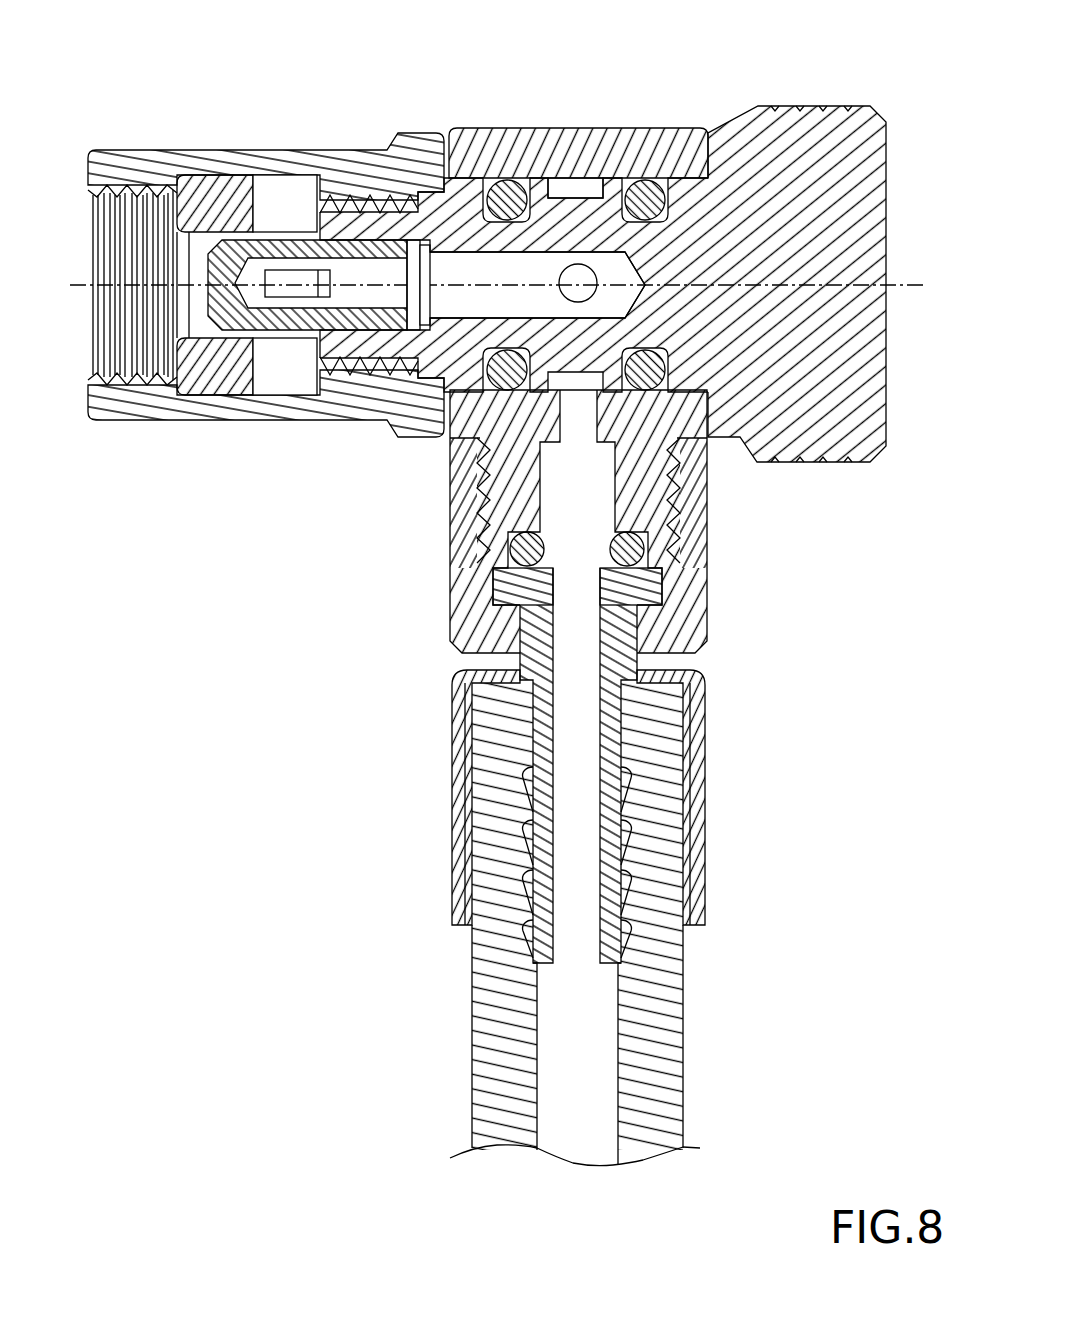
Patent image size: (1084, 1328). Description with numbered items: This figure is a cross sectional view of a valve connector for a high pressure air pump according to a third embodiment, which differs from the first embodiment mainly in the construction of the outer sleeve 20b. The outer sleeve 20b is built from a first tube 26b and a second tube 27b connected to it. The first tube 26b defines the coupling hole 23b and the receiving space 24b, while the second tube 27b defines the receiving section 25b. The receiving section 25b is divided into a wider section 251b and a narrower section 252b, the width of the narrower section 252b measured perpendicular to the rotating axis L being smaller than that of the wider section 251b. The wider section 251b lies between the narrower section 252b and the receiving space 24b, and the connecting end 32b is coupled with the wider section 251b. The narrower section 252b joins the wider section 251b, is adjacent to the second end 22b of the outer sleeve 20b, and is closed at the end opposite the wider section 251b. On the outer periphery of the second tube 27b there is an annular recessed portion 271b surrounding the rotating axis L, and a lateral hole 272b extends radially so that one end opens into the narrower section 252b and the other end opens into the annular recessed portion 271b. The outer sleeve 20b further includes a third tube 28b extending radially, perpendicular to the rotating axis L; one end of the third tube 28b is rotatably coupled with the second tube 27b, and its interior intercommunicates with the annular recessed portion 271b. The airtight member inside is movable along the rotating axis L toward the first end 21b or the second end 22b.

The outer sleeve 20b is at (491, 586).
The first end 21b is at (88, 152).
The second end 22b is at (888, 143).
The coupling hole 23b is at (93, 362).
The receiving space 24b is at (276, 168).
The receiving section 25b is at (540, 243).
The wider section 251b is at (347, 249).
The narrower section 252b is at (473, 259).
The first tube 26b is at (188, 174).
The second tube 27b is at (788, 138).
The annular recessed portion 271b is at (583, 193).
The lateral hole 272b is at (594, 268).
The third tube 28b is at (653, 413).
The connecting end 32b is at (405, 343).
The rotating axis L is at (912, 272).